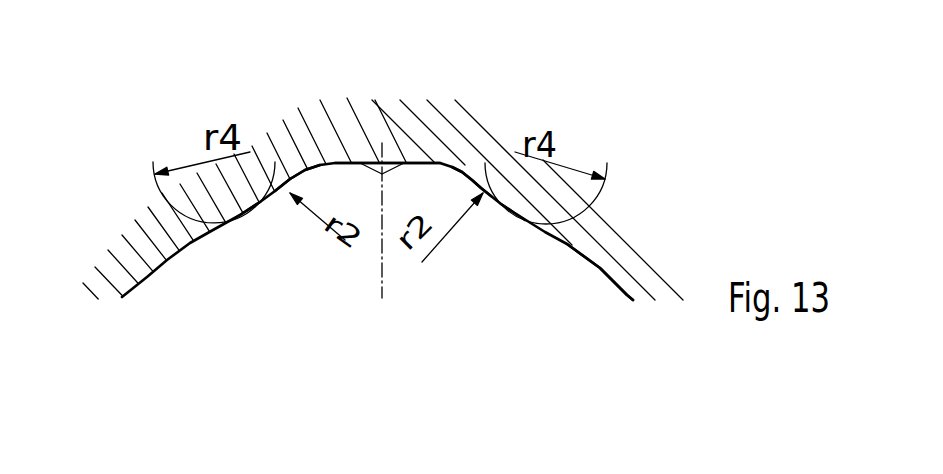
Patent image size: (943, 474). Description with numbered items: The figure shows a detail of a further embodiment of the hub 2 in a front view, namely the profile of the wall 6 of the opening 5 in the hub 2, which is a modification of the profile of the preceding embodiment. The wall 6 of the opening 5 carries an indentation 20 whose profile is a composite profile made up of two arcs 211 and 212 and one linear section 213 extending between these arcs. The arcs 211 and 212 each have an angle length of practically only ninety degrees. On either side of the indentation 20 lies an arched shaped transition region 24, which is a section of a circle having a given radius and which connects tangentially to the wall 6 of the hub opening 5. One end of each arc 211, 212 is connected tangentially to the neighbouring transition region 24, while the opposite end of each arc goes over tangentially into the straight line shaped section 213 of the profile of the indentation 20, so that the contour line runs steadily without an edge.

The hub 2 is at (128, 308).
The arc 211 is at (318, 160).
The linear section 213 is at (372, 160).
The indentation 20 is at (398, 162).
The arc 212 is at (468, 175).
The transition region 24 is at (248, 212).
The opening 5 is at (510, 334).
The wall 6 is at (613, 283).